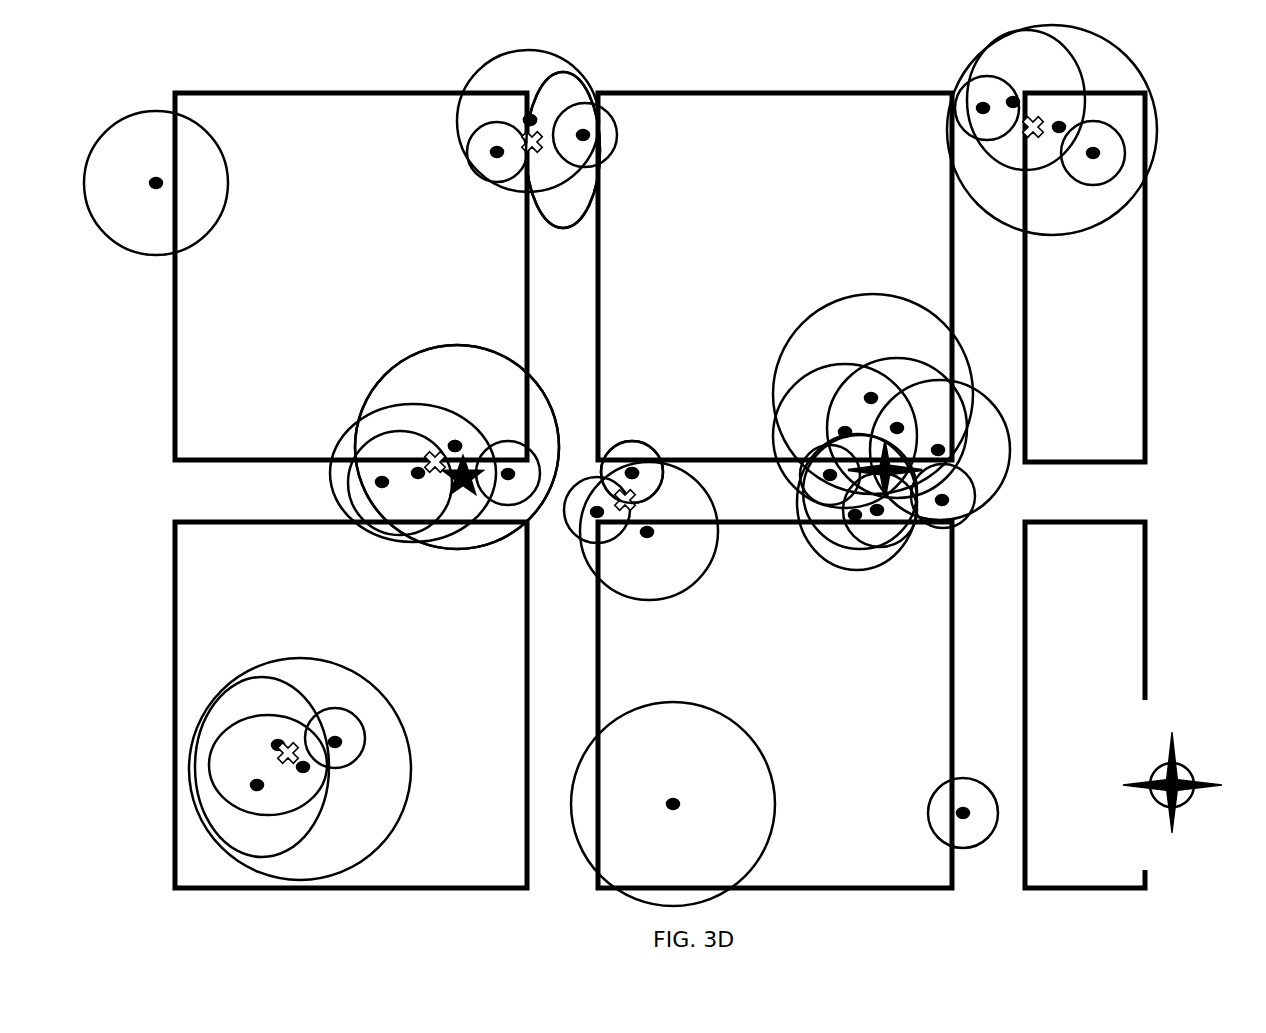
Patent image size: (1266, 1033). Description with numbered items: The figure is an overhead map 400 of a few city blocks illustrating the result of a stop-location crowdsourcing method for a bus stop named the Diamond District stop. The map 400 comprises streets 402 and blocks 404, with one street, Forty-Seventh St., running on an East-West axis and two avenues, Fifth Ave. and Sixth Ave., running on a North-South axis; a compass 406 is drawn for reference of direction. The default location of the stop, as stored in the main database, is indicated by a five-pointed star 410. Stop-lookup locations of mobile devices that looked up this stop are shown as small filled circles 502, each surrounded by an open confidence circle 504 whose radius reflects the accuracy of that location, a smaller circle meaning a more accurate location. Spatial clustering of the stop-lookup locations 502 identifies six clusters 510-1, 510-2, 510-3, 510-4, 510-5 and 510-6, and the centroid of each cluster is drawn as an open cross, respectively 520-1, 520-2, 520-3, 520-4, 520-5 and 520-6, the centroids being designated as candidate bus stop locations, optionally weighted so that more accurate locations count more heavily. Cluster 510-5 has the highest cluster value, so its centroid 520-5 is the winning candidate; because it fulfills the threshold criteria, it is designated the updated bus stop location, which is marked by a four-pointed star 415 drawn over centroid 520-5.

The map 400 is at (252, 69).
The streets 402 is at (161, 510).
The blocks 404 is at (343, 92).
The compass 406 is at (1097, 860).
The five-pointed star 410 is at (464, 490).
The four-pointed star 415 is at (885, 470).
The stop-lookup locations 502 is at (530, 120).
The confidence circles 504 is at (600, 210).
The cluster 510-1 is at (444, 187).
The cluster 510-2 is at (329, 399).
The cluster 510-3 is at (207, 661).
The cluster 510-4 is at (959, 203).
The cluster 510-5 is at (1003, 330).
The cluster 510-6 is at (654, 625).
The cluster centroid 520-1 is at (532, 152).
The cluster centroid 520-2 is at (430, 460).
The cluster centroid 520-3 is at (288, 745).
The cluster centroid 520-4 is at (1030, 135).
The cluster centroid 520-5 is at (885, 470).
The cluster centroid 520-6 is at (630, 505).